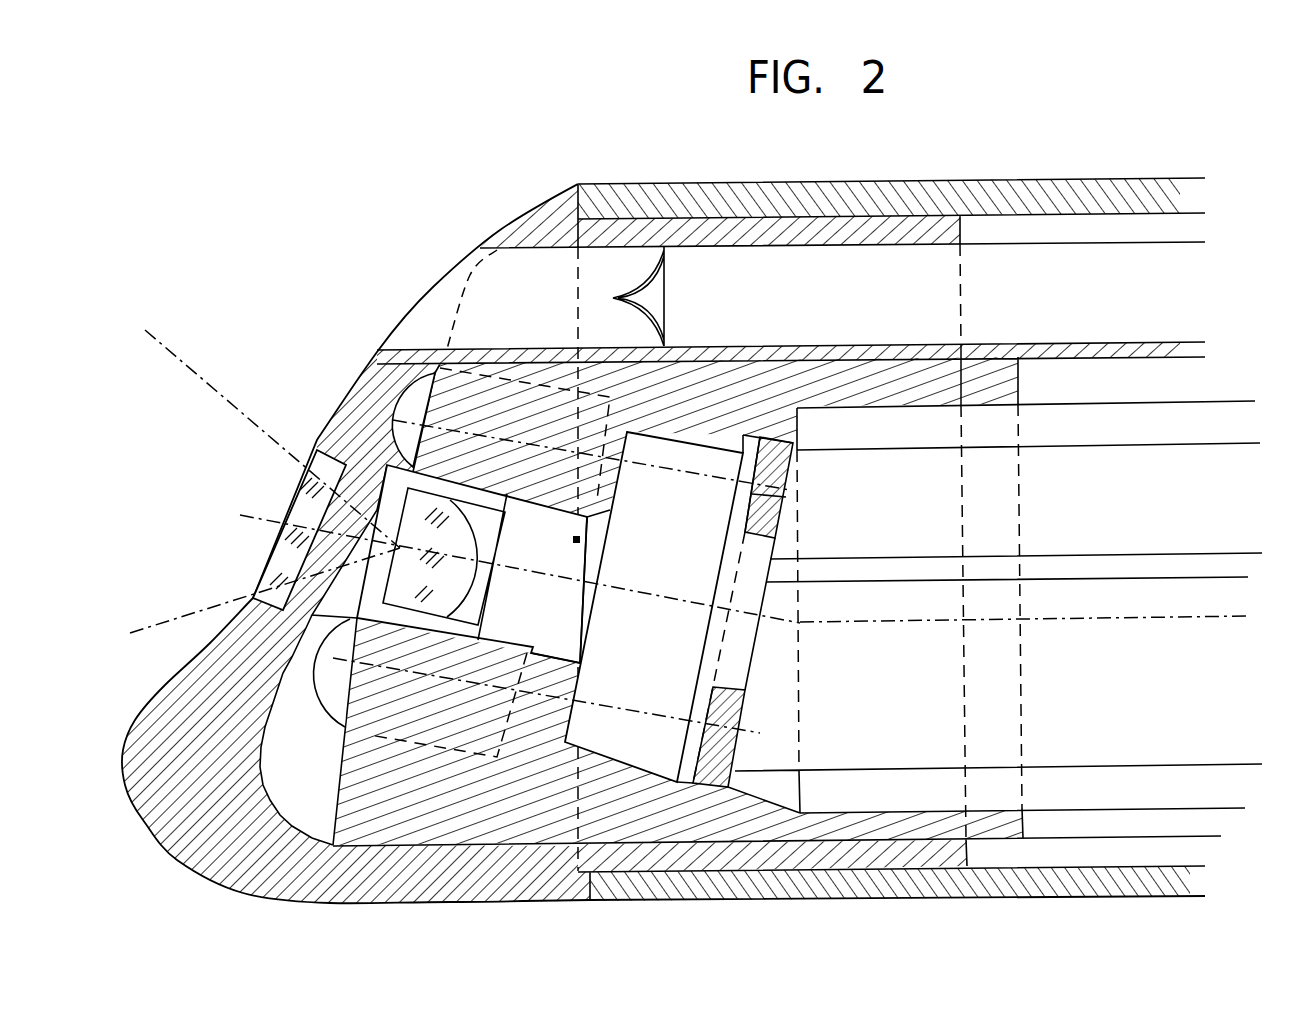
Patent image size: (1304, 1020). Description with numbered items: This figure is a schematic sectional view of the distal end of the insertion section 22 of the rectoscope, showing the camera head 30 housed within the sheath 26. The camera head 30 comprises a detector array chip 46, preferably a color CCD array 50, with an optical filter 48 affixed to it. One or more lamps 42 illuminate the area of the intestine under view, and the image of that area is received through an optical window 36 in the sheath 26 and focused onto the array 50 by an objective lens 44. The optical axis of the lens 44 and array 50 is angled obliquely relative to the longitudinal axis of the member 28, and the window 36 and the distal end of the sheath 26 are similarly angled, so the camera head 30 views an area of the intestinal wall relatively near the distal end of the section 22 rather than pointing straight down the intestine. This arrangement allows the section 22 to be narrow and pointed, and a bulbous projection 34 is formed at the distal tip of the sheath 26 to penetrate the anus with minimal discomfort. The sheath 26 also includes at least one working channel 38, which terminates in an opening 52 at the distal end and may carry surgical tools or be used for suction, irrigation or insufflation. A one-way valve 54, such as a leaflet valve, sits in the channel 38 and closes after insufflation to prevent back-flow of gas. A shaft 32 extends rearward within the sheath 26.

The insertion section 22 is at (458, 219).
The sheath 26 is at (650, 190).
The member 28 is at (1128, 406).
The camera head 30 is at (763, 363).
The shaft 32 is at (1043, 580).
The bulbous projection 34 is at (160, 848).
The optical window 36 is at (290, 486).
The working channel 38 is at (1036, 313).
The lamp 42 is at (553, 385).
The objective lens 44 is at (468, 583).
The detector array chip 46 is at (576, 539).
The optical filter 48 is at (580, 627).
The color CCD array 50 is at (725, 503).
The opening 52 is at (432, 300).
The one-way valve 54 is at (646, 278).